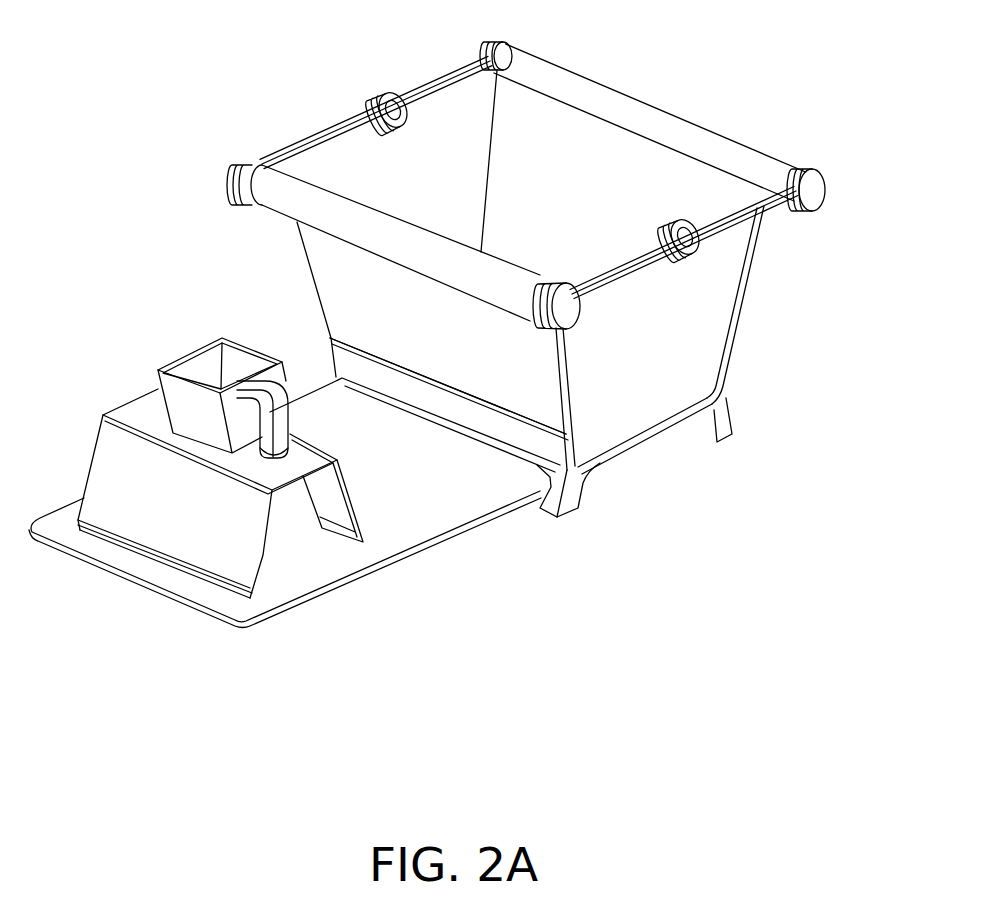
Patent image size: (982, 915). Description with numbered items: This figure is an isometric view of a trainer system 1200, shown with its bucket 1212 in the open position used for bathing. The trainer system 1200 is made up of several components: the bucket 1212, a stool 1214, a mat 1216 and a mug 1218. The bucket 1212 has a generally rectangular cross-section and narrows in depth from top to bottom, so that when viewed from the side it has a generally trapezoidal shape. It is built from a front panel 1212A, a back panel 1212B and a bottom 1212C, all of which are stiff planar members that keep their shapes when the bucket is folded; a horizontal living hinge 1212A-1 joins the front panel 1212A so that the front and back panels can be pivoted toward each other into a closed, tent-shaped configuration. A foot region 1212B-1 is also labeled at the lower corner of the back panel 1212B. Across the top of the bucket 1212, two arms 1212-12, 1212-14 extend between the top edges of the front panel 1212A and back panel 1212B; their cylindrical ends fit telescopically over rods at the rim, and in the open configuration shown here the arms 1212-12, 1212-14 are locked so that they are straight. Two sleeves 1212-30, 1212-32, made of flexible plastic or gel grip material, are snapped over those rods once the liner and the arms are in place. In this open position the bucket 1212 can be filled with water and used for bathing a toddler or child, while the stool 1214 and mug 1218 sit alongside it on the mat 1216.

The trainer system 1200 is at (301, 96).
The bucket 1212 is at (640, 400).
The front panel 1212A is at (520, 392).
The horizontal living hinge 1212A-1 is at (466, 402).
The back panel 1212B is at (742, 320).
The right foot of basket 1212B-1 is at (722, 382).
The bottom 1212C is at (633, 440).
The arm 1212-12 is at (610, 274).
The arm 1212-14 is at (320, 136).
The sleeve 1212-30 is at (283, 202).
The sleeve 1212-32 is at (650, 108).
The stool 1214 is at (223, 547).
The mat 1216 is at (413, 507).
The mug 1218 is at (190, 412).